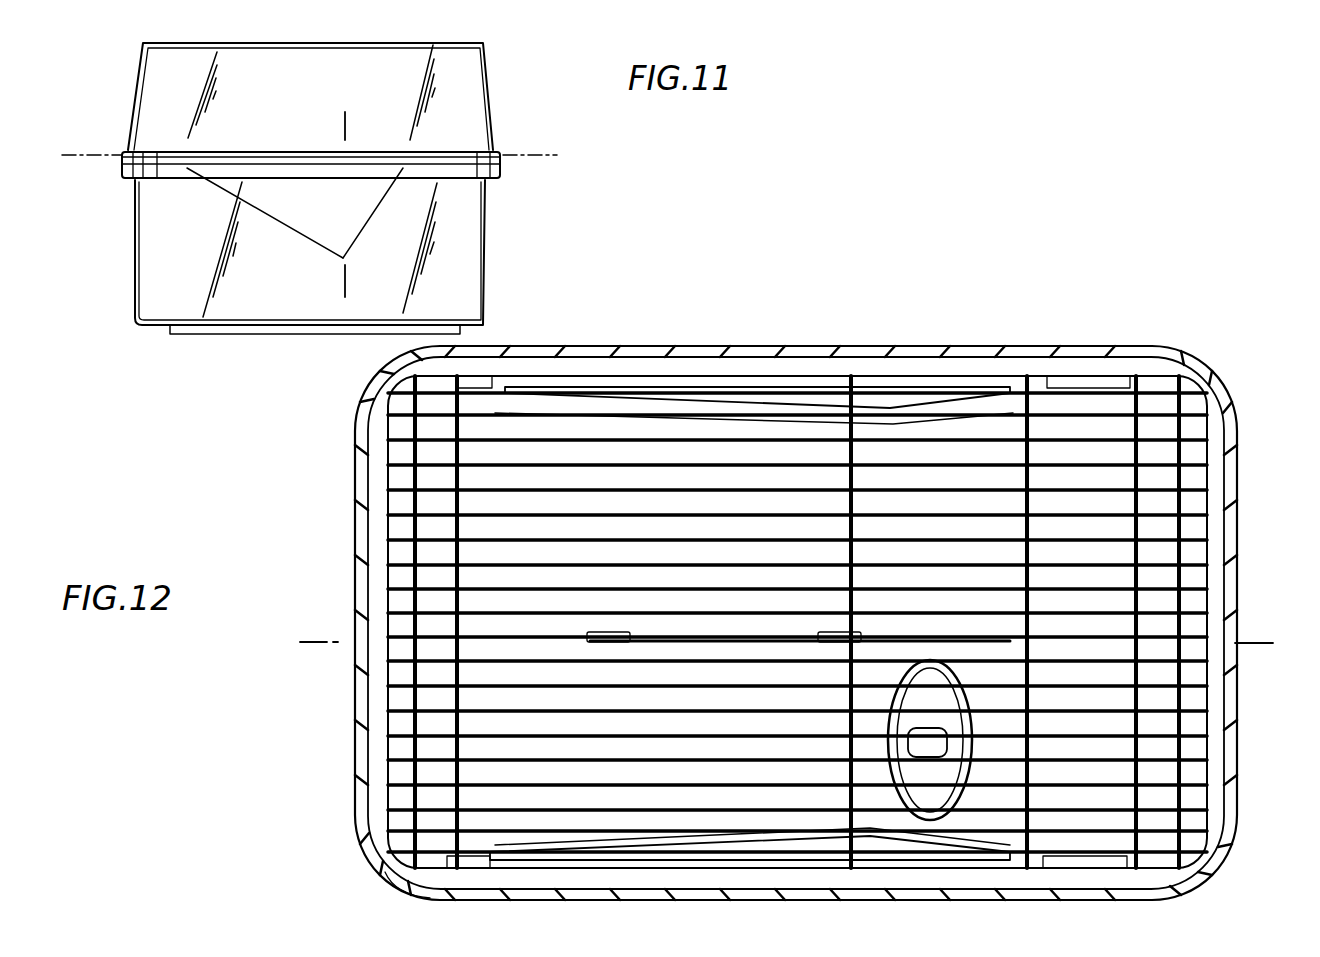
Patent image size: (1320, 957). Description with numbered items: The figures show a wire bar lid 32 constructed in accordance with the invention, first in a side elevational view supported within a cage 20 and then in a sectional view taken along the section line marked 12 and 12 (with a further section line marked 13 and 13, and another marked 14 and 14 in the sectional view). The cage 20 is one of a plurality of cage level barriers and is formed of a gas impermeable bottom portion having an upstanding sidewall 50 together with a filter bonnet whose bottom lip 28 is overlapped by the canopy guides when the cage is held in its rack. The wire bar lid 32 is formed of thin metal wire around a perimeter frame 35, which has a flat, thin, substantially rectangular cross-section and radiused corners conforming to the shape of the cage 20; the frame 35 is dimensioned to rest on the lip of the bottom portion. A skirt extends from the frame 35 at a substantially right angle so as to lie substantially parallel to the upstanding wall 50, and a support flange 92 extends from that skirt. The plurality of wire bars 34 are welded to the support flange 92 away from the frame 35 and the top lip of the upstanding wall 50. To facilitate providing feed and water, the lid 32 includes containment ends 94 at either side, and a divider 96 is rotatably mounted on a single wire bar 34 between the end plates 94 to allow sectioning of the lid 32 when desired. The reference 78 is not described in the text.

In FIG. 11, the rack 12 is at (86, 152).
In FIG. 11, the section line 13- 13 is at (343, 125).
In FIG. 12, the shelf 14 is at (313, 646).
In FIG. 11, the cage 20 is at (128, 254).
In FIG. 11, the lip 28 is at (505, 165).
In FIG. 12, the lip 28 is at (603, 347).
In FIG. 11, the wire bar lid 32 is at (385, 228).
In FIG. 12, the wire bar lid 32 is at (788, 370).
In FIG. 11, the wire bars 34 is at (300, 237).
In FIG. 12, the wire bars 34 is at (487, 485).
In FIG. 12, the perimeter frame 35 is at (387, 407).
In FIG. 11, the upstanding sidewall 50 is at (477, 263).
In FIG. 12, the bottom edge 78 is at (391, 886).
In FIG. 12, the support flange 92 is at (388, 527).
In FIG. 12, the containment ends 94 is at (973, 390).
In FIG. 12, the divider 96 is at (958, 641).